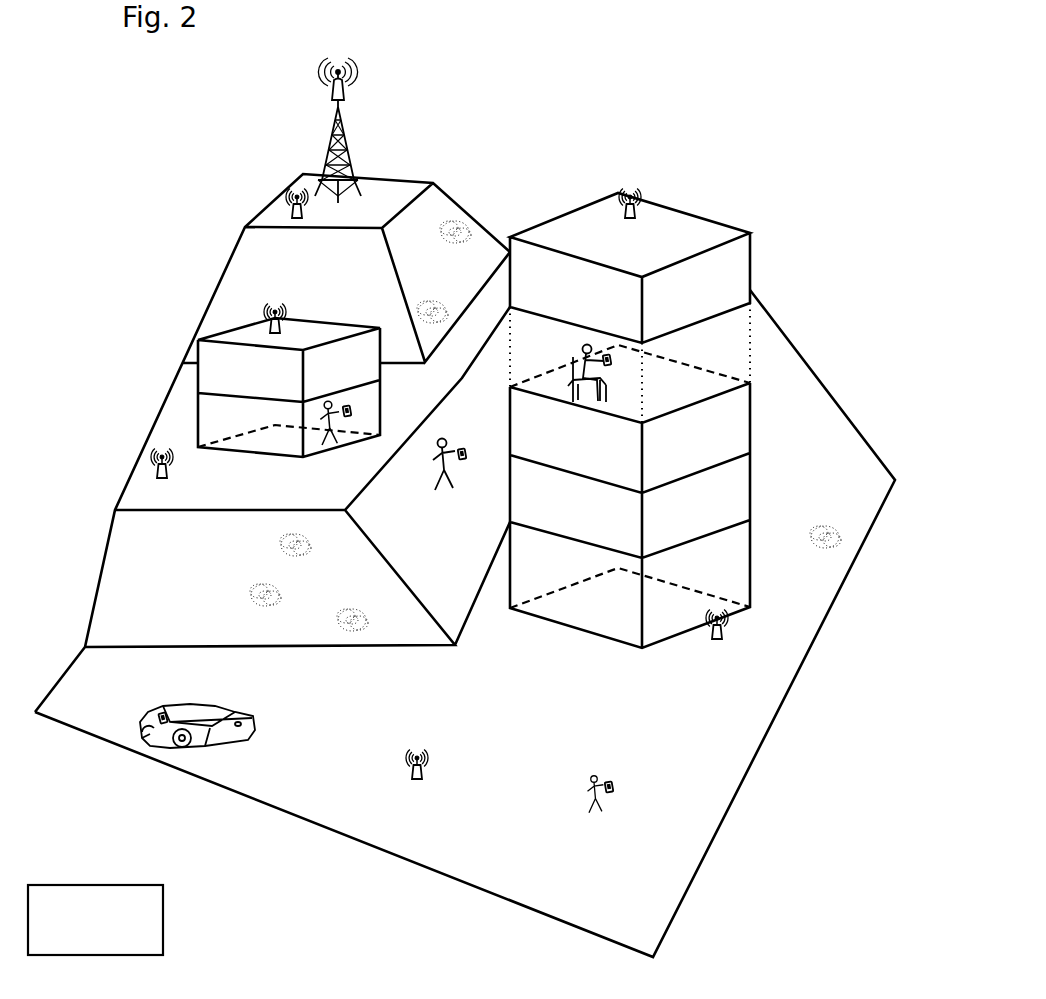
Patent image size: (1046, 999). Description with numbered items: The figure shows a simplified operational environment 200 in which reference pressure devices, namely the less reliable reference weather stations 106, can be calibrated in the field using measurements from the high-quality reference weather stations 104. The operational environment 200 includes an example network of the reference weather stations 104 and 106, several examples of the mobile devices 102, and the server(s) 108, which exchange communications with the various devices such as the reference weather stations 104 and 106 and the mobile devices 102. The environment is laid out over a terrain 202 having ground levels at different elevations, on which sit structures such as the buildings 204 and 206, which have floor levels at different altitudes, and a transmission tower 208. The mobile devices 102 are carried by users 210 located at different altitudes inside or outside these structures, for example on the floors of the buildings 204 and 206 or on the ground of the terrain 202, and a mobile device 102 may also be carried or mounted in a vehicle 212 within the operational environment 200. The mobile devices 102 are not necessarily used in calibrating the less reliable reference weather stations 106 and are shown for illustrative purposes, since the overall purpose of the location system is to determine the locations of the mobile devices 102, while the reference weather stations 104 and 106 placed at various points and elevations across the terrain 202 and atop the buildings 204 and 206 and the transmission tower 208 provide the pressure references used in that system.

The operational environment 200 is at (648, 85).
The terrain 202 is at (112, 532).
The building 204 is at (352, 320).
The building 206 is at (676, 212).
The transmission tower 208 is at (330, 143).
The user 210 is at (326, 400).
The vehicle 212 is at (175, 705).
The mobile device 102 is at (355, 410).
The high-quality reference weather station 104 is at (348, 88).
The less reliable reference weather station 106 is at (290, 214).
The server 108 is at (98, 885).